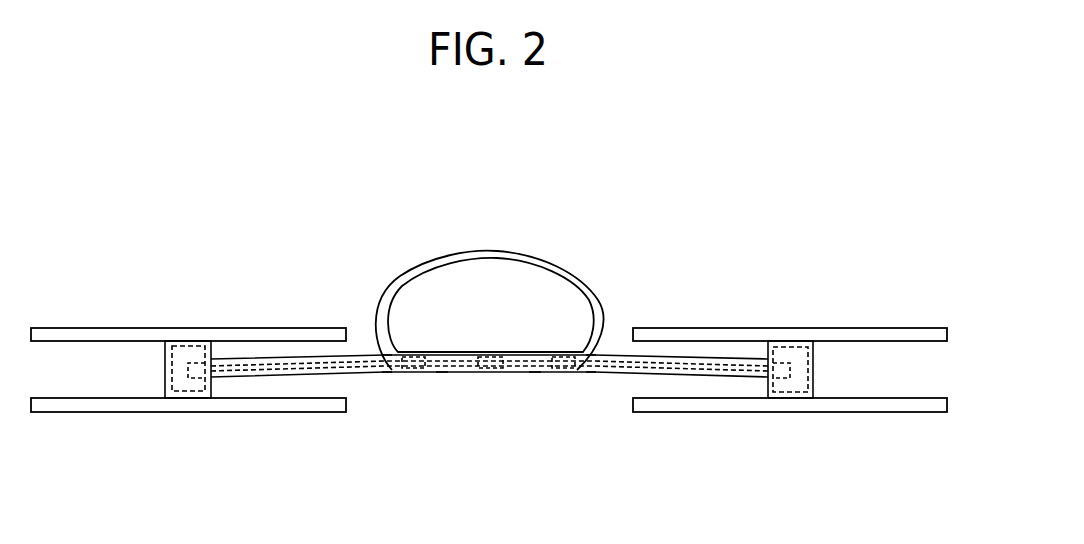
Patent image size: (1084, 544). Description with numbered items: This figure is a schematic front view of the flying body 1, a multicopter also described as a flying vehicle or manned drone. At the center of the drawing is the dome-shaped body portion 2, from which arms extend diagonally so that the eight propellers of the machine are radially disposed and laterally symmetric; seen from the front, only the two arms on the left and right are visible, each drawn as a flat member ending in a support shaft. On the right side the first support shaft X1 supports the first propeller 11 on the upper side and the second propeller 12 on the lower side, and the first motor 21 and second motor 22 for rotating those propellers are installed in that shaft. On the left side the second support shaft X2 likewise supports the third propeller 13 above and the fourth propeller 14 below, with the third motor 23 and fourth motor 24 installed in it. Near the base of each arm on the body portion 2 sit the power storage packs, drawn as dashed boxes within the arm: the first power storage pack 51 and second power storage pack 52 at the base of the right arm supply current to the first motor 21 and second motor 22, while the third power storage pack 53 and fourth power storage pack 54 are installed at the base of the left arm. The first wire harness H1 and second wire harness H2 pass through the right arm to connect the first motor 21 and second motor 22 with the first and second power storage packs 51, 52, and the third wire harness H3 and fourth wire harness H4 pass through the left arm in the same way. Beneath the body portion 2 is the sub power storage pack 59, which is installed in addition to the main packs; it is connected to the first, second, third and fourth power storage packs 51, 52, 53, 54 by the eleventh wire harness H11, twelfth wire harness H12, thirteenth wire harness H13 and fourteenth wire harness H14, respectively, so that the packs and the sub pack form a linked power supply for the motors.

The flying body 1 is at (497, 512).
The body portion 2 is at (507, 252).
The first propeller 11 is at (843, 328).
The second propeller 12 is at (843, 412).
The third propeller 13 is at (135, 328).
The fourth propeller 14 is at (135, 412).
The first motor 21 is at (807, 357).
The second motor 22 is at (807, 383).
The third motor 23 is at (173, 357).
The fourth motor 24 is at (173, 383).
The first power storage pack 51 is at (573, 383).
The second power storage pack 52 is at (567, 372).
The third power storage pack 53 is at (402, 383).
The fourth power storage pack 54 is at (413, 372).
The sub power storage pack 59 is at (487, 372).
The first support shaft X1 is at (815, 372).
The second support shaft X2 is at (165, 372).
The first wire harness H1 is at (596, 355).
The second wire harness H2 is at (596, 372).
The third wire harness H3 is at (382, 355).
The fourth wire harness H4 is at (382, 372).
The eleventh wire harness H11 is at (458, 372).
The twelfth wire harness H12 is at (535, 372).
The thirteenth wire harness H13 is at (489, 383).
The fourteenth wire harness H14 is at (442, 372).